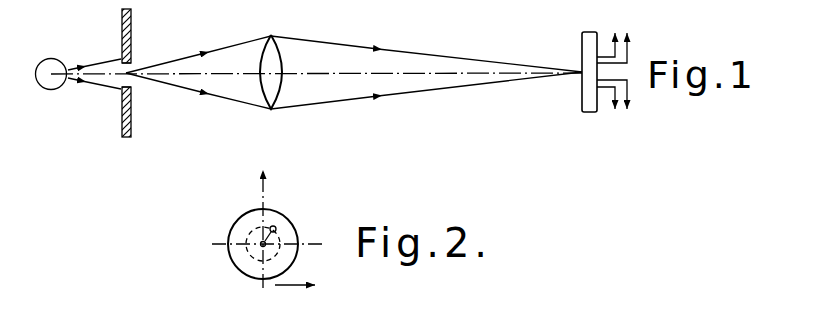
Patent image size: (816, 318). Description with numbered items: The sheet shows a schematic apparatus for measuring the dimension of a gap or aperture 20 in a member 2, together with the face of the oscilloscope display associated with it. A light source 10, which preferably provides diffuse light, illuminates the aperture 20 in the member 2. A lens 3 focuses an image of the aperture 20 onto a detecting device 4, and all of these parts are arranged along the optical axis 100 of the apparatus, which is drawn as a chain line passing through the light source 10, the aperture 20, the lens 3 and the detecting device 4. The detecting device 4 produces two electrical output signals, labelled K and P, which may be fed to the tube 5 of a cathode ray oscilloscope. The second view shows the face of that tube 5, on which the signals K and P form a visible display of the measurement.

In FIG. 1, the light source 10 is at (58, 61).
In FIG. 1, the member 2 is at (131, 115).
In FIG. 1, the aperture 20 is at (128, 71).
In FIG. 1, the lens 3 is at (273, 60).
In FIG. 1, the optical axis 100 is at (345, 73).
In FIG. 1, the detecting device 4 is at (588, 43).
In FIG. 2, the tube 5 is at (234, 229).